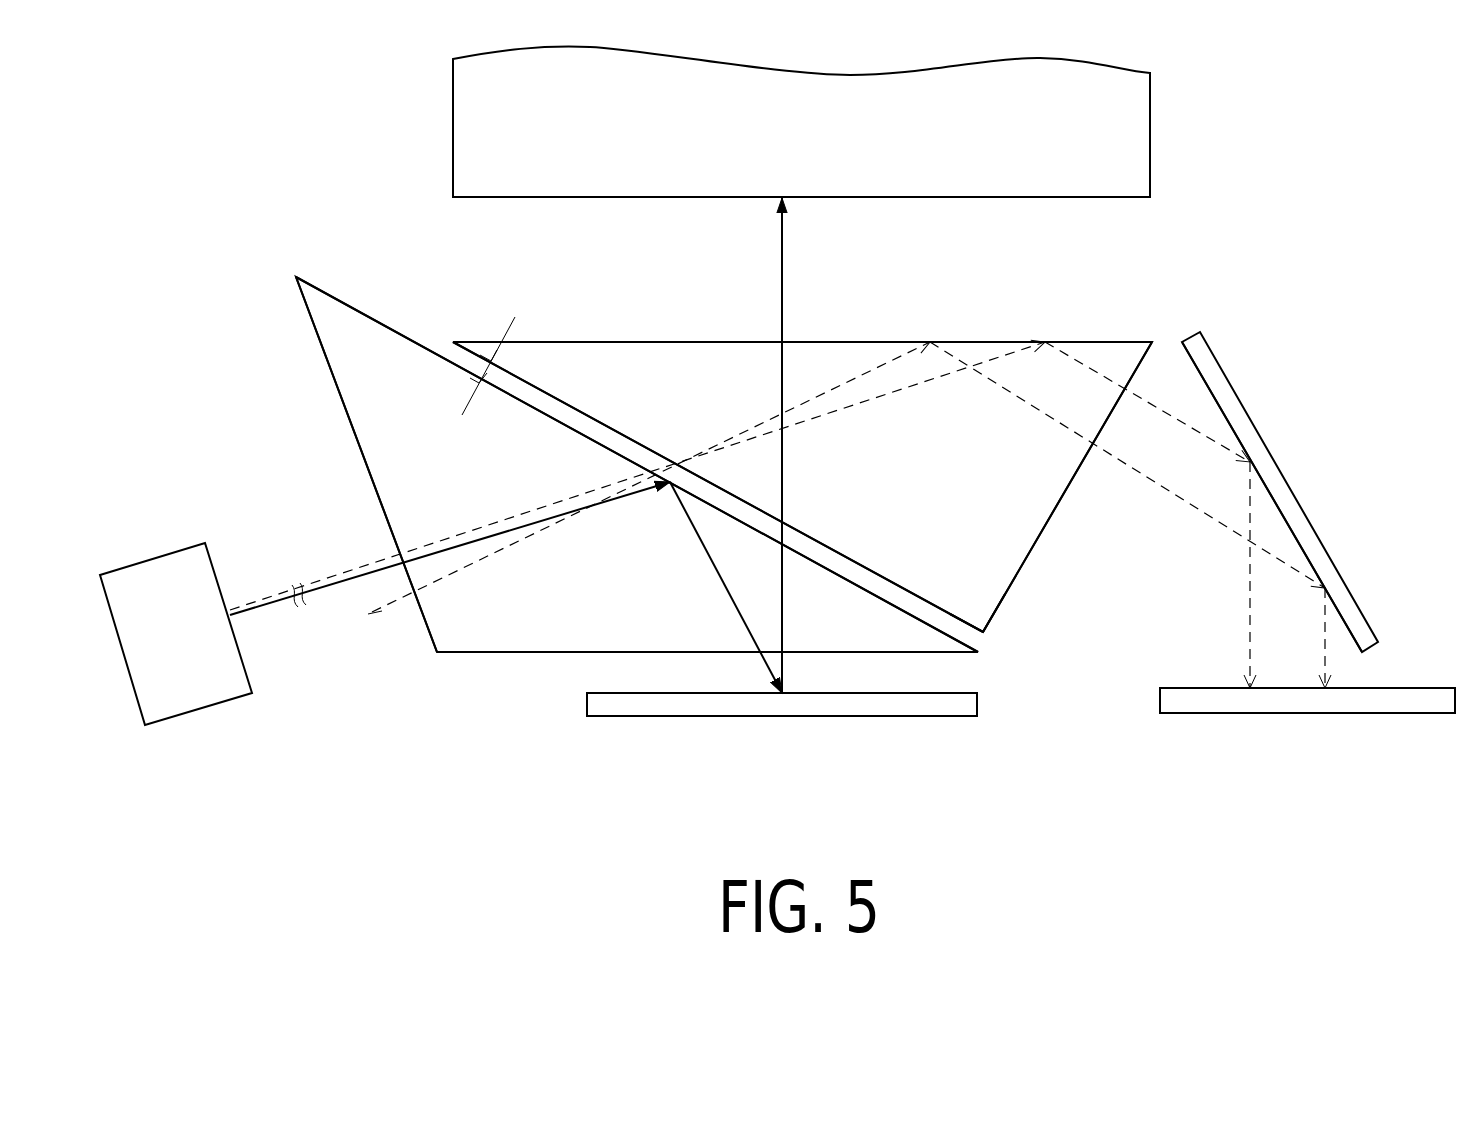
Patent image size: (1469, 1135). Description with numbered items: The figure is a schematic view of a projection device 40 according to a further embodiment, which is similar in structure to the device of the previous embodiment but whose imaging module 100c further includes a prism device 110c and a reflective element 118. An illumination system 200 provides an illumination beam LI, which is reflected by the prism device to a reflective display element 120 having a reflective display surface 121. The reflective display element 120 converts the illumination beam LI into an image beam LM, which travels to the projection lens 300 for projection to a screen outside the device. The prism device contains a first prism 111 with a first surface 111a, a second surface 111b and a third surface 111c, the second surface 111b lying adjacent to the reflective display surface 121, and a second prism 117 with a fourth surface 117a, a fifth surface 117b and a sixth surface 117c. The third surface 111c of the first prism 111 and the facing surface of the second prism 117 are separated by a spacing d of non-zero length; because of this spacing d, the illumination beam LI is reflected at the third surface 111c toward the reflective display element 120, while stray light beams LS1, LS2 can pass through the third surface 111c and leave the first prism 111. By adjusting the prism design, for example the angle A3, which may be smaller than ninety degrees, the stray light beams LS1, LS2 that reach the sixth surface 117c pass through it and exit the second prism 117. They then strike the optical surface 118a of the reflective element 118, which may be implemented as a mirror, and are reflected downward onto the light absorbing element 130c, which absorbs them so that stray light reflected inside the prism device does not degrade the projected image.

The projection device 40 is at (256, 138).
The projection lens 300 is at (1125, 130).
The second prism 117 is at (575, 342).
The prism device 110c is at (1030, 330).
The fifth surface 117b is at (720, 344).
The angle A3 is at (1136, 364).
The fourth surface 117a is at (860, 568).
The sixth surface 117c is at (1002, 598).
The first prism 111 is at (488, 656).
The first surface 111a is at (312, 327).
The second surface 111b is at (548, 658).
The third surface 111c is at (395, 335).
The spacing d is at (478, 372).
The illumination system 200 is at (155, 588).
The illumination beam LI is at (272, 608).
The image beam LM is at (785, 305).
The stray light beam LS1 is at (373, 618).
The stray light beam LS2 is at (345, 575).
The reflective element 118 is at (1285, 502).
The optical surface 118a is at (1290, 532).
The light absorbing element 130c is at (1418, 715).
The reflective display element 120 is at (672, 718).
The reflective display surface 121 is at (892, 692).
The imaging module 100c is at (1060, 588).